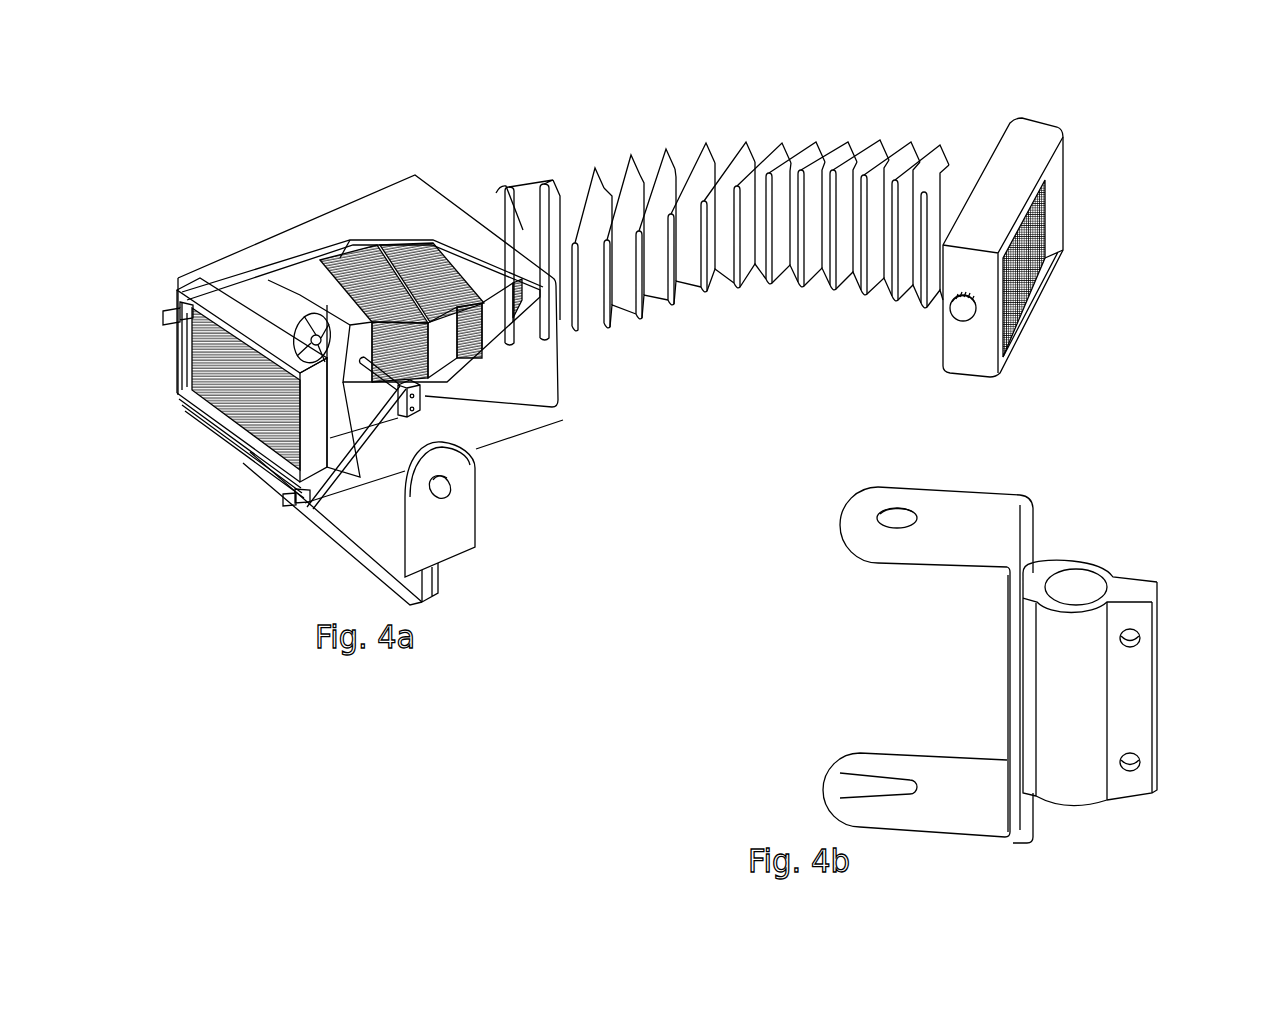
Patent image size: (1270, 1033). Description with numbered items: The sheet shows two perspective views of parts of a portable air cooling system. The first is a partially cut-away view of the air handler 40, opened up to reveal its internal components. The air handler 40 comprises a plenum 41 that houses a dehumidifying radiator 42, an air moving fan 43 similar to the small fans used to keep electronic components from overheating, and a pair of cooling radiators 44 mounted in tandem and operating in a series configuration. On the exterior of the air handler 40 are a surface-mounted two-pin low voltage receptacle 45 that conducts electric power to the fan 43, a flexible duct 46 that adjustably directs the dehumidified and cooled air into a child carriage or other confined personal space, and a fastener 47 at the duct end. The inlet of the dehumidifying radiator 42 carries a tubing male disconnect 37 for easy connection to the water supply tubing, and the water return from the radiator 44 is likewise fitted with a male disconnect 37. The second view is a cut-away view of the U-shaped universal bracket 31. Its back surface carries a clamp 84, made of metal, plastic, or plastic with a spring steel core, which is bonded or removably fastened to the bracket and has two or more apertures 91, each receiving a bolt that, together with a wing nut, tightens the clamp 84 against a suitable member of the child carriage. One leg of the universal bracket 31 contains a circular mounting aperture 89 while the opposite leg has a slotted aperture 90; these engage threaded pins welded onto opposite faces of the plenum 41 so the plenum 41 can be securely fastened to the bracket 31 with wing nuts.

In FIG. 4A, the air handler 40 is at (521, 132).
In FIG. 4A, the plenum 41 is at (293, 228).
In FIG. 4A, the dehumidifying radiator 42 is at (177, 400).
In FIG. 4A, the air moving fan 43 is at (293, 307).
In FIG. 4A, the cooling radiators 44 is at (368, 255).
In FIG. 4A, the two-pin low voltage receptacle 45 is at (420, 403).
In FIG. 4A, the flexible duct 46 is at (728, 173).
In FIG. 4A, the fastener 47 is at (968, 353).
In FIG. 4A, the tubing male disconnect 37 is at (180, 305).
In FIG. 4A, the universal bracket 31 is at (463, 528).
In FIG. 4B, the universal bracket 31 is at (1078, 471).
In FIG. 4A, the circular mounting aperture 89 is at (447, 487).
In FIG. 4B, the circular mounting aperture 89 is at (893, 515).
In FIG. 4A, the clamp 84 is at (438, 592).
In FIG. 4B, the clamp 84 is at (1090, 563).
In FIG. 4B, the slotted aperture 90 is at (852, 775).
In FIG. 4B, the apertures 91 is at (1137, 640).